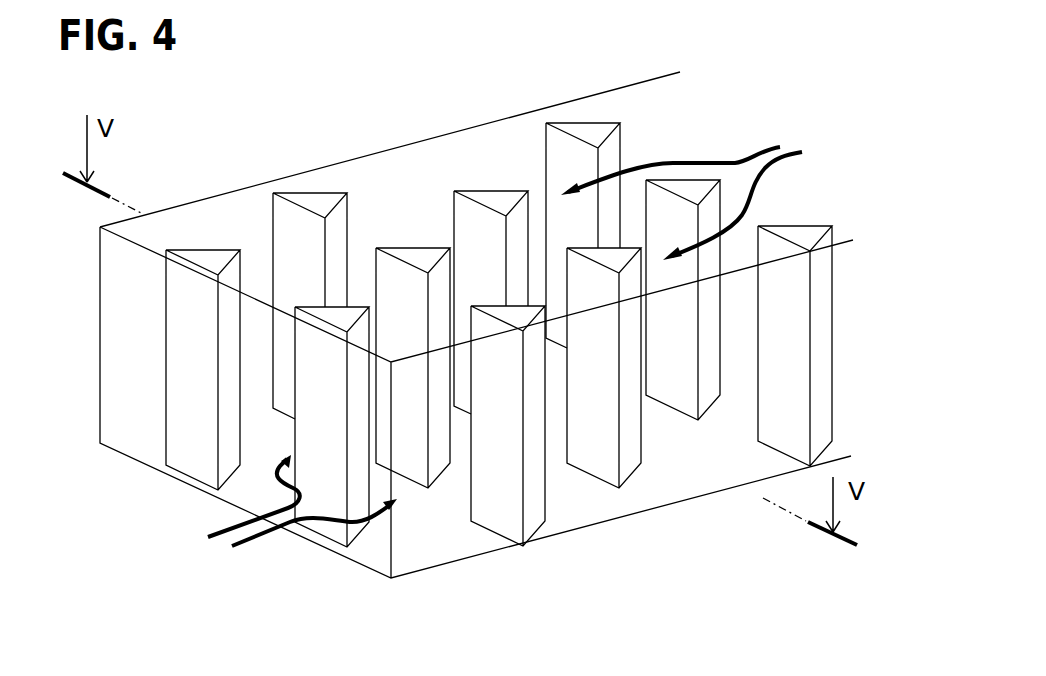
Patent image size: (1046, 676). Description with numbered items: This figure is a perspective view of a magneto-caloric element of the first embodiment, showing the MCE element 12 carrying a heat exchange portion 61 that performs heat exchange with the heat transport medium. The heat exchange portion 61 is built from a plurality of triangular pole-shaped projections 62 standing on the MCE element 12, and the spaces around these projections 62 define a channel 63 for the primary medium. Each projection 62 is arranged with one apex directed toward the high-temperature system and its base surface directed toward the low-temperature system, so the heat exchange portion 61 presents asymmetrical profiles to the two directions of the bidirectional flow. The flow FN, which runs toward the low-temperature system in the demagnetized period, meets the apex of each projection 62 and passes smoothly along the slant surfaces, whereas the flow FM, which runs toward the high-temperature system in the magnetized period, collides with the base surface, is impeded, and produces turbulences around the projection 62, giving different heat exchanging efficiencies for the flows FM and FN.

The MCE element 12 is at (183, 205).
The heat exchange portion 61 is at (266, 156).
The projection 62 is at (323, 193).
The channel 63 is at (381, 227).
The flow FN is at (717, 163).
The flow FM is at (226, 521).